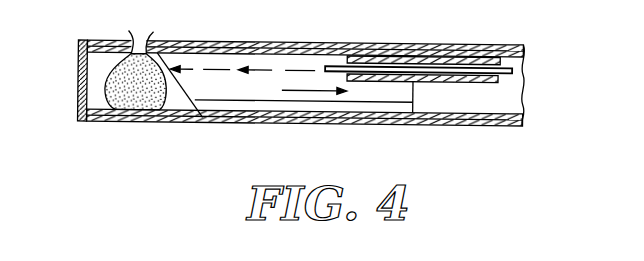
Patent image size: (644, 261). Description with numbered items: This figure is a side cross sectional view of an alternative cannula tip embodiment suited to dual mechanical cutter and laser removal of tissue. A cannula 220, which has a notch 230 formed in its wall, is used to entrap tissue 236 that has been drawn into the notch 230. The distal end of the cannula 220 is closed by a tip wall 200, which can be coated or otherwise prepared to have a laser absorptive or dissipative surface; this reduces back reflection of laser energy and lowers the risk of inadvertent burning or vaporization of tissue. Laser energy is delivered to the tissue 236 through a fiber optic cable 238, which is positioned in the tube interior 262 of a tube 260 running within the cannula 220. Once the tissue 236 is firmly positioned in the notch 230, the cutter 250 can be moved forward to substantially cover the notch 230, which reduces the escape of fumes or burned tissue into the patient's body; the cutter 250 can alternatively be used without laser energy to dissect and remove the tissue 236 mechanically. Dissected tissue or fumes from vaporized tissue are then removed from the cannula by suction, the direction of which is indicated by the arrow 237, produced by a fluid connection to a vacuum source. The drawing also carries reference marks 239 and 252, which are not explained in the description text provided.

The tip wall 200 is at (78, 101).
The cannula 220 is at (418, 18).
The notch 230 is at (172, 42).
The tissue 236 is at (113, 80).
The arrow 237 is at (318, 92).
The fiber optic cable 238 is at (512, 71).
The upper flow channel 239 is at (218, 72).
The cutter 250 is at (279, 66).
The flap valve 252 is at (173, 93).
The tube 260 is at (466, 61).
The tube interior 262 is at (529, 71).